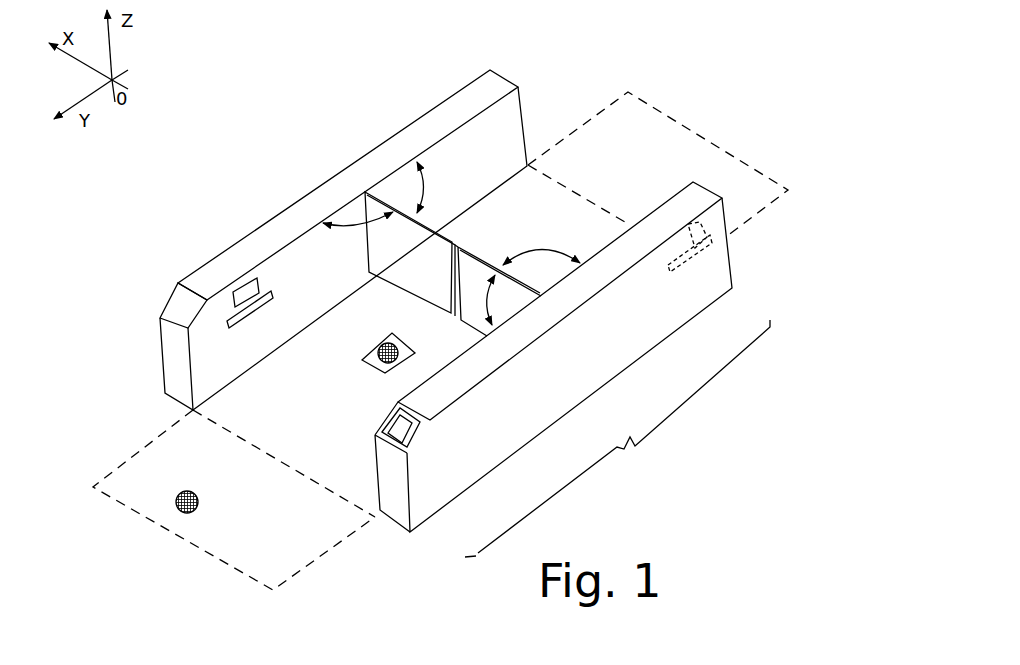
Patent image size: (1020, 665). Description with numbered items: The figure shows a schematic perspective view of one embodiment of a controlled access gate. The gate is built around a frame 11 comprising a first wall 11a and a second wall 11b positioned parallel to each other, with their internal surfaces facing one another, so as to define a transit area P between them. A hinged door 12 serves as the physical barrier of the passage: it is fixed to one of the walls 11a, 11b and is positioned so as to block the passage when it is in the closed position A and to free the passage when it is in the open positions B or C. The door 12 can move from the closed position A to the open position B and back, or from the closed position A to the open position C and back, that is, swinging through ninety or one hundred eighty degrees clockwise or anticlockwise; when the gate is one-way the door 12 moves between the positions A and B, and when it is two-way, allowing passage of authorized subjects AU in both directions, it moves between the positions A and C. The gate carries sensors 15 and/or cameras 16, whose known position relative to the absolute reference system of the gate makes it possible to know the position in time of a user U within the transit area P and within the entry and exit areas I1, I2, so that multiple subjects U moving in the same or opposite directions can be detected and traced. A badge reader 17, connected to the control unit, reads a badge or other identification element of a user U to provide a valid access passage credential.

The frame 11 is at (384, 138).
The first wall 11a is at (209, 257).
The second wall 11b is at (744, 167).
The hinged door 12 is at (474, 254).
The sensor 15 is at (265, 245).
The camera 16 is at (268, 282).
The badge reader 17 is at (403, 432).
The authorized subject AU is at (403, 358).
The user U is at (176, 512).
The transit area P is at (659, 473).
The entry area I1 is at (302, 568).
The exit area I2 is at (716, 150).
The closed position A is at (450, 240).
The open position B is at (502, 210).
The open position C is at (403, 269).